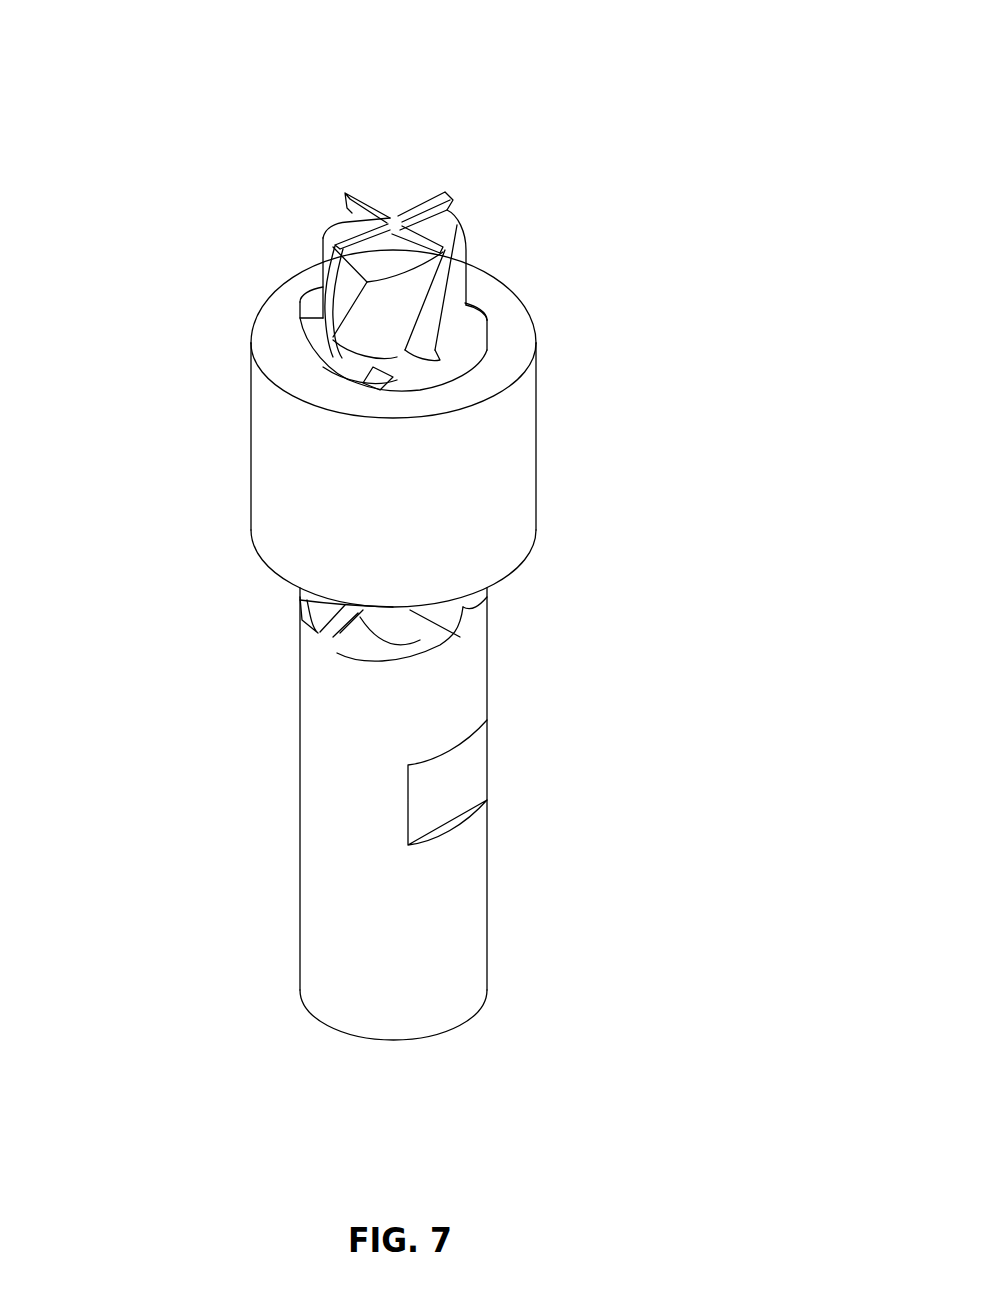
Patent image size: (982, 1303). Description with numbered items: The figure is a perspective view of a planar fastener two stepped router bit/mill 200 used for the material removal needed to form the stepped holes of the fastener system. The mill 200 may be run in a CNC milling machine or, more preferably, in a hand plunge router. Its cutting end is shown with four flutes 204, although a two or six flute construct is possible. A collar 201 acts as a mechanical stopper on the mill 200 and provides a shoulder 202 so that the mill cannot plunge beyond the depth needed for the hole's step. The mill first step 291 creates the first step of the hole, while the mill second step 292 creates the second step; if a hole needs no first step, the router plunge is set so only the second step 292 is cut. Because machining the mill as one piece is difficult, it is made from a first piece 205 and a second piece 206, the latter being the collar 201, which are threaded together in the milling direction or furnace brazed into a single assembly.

The two stepped router bit/mill 200 is at (560, 497).
The collar 201 is at (537, 383).
The shoulder 202 is at (513, 327).
The flute 204 is at (352, 222).
The first piece 205 is at (488, 871).
The second piece 206 is at (515, 582).
The mill first step 291 is at (430, 375).
The mill second step 292 is at (330, 265).